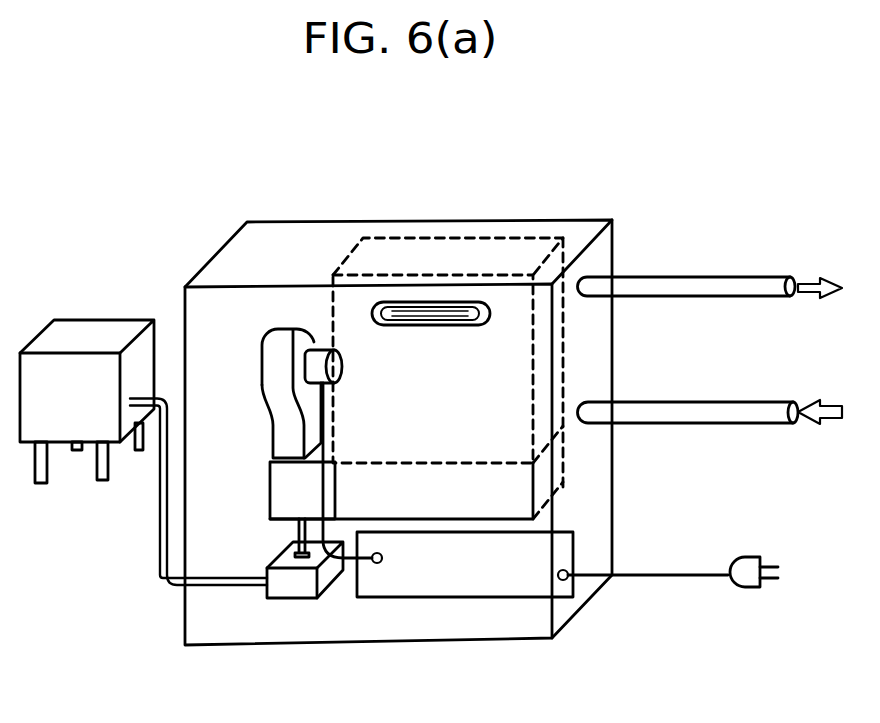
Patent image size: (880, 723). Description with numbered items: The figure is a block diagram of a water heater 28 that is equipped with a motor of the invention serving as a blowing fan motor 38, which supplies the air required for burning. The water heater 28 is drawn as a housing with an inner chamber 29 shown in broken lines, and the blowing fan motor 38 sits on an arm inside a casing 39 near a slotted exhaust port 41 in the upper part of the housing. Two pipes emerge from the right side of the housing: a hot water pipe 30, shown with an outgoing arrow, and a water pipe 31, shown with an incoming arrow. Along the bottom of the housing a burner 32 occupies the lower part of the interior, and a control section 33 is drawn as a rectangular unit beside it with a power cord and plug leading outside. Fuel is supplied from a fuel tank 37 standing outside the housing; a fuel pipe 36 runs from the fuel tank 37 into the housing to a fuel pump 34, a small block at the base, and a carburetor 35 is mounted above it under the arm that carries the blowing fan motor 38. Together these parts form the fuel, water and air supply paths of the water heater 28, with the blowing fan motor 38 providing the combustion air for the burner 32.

The water heater 28 is at (452, 193).
The hydrogen storage chamber 29 is at (563, 340).
The hot water pipe 30 is at (730, 275).
The water pipe 31 is at (670, 427).
The burner 32 is at (447, 487).
The control section 33 is at (495, 587).
The fuel pump 34 is at (290, 588).
The carburetor 35 is at (277, 500).
The fuel pipe 36 is at (157, 513).
The fuel tank 37 is at (90, 333).
The blowing fan motor 38 is at (316, 350).
The casing 39 is at (270, 350).
The exhaust port 41 is at (470, 310).